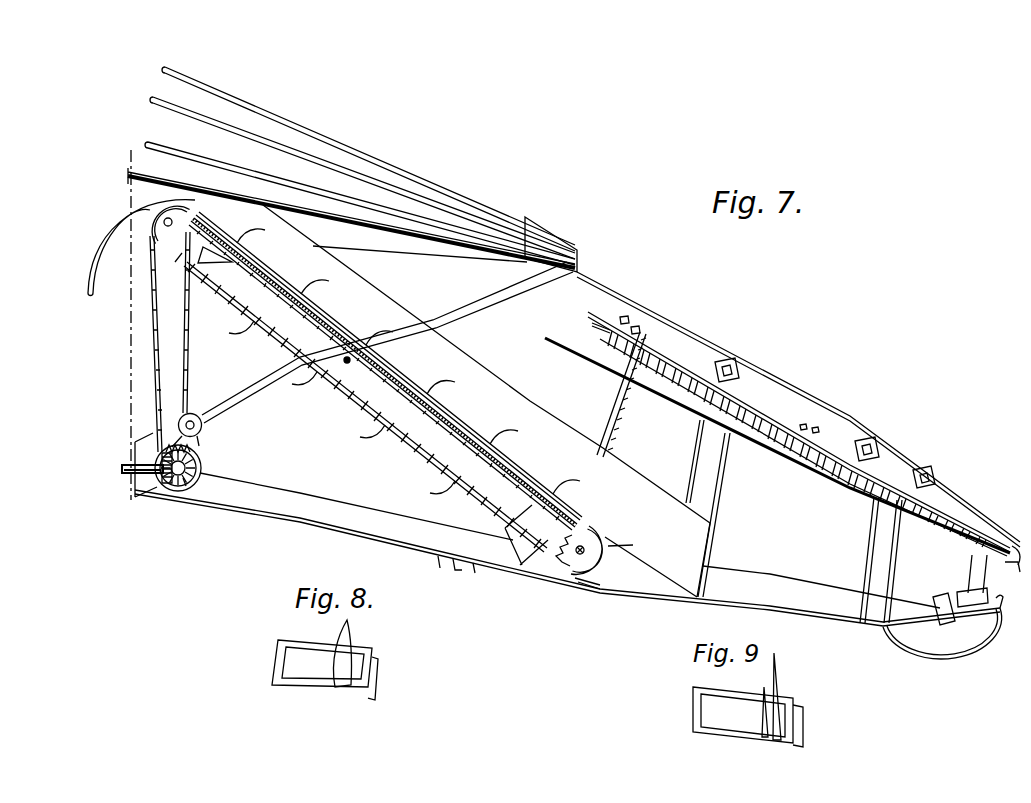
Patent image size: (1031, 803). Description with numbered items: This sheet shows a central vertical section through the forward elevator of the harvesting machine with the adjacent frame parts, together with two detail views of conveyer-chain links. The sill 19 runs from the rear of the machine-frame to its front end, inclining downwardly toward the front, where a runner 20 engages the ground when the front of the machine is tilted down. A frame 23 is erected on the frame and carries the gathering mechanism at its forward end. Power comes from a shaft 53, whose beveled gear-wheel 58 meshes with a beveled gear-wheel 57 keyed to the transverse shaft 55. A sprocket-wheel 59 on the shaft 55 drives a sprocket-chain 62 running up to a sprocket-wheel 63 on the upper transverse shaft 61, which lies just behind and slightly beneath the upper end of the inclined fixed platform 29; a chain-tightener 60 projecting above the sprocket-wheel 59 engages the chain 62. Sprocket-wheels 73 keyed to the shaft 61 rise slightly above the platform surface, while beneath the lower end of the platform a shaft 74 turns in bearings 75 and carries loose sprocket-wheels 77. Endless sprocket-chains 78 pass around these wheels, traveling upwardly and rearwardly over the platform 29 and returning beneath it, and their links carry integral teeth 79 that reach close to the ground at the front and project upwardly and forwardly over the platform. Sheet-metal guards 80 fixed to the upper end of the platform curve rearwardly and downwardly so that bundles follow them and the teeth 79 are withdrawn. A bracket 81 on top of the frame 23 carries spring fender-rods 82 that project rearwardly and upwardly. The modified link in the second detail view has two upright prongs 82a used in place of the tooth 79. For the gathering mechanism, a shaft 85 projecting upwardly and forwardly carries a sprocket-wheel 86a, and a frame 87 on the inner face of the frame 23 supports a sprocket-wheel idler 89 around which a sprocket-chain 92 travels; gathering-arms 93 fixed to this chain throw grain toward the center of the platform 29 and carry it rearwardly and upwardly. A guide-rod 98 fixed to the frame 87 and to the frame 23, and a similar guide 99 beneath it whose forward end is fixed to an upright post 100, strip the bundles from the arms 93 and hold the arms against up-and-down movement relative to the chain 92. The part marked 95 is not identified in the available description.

In FIG. 7, the spring fender-rods 82 is at (245, 107).
In FIG. 7, the transverse shaft 61 is at (170, 222).
In FIG. 7, the sprocket-wheels 73 is at (160, 215).
In FIG. 7, the sprocket-wheel 63 is at (186, 222).
In FIG. 7, the sheet-metal guards 80 is at (95, 280).
In FIG. 7, the teeth 79 is at (310, 296).
In FIG. 8, the teeth 79 is at (350, 632).
In FIG. 7, the sprocket-chain 62 is at (188, 378).
In FIG. 7, the chain-tightener 60 is at (202, 424).
In FIG. 7, the sprocket-wheel 59 is at (201, 452).
In FIG. 7, the shaft 55 is at (202, 468).
In FIG. 7, the shaft 53 is at (128, 470).
In FIG. 7, the beveled gear-wheel 58 is at (167, 486).
In FIG. 7, the beveled gear-wheel 57 is at (184, 484).
In FIG. 7, the sill 19 is at (567, 549).
In FIG. 7, the inclined fixed platform 29 is at (507, 400).
In FIG. 7, the endless sprocket-chains 78 is at (412, 450).
In FIG. 8, the endless sprocket-chains 78 is at (292, 640).
In FIG. 7, the sprocket-wheels 77 is at (598, 547).
In FIG. 7, the shaft 74 is at (578, 554).
In FIG. 7, the bearings 75 is at (592, 580).
In FIG. 7, the bracket 81 is at (578, 254).
In FIG. 7, the frame 23 is at (798, 419).
In FIG. 7, the guide-rod 98 is at (520, 300).
In FIG. 7, the guide 99 is at (535, 318).
In FIG. 7, the gathering-arms 93 is at (562, 322).
In FIG. 7, the sprocket-chain 92 is at (772, 440).
In FIG. 7, the sprocket-wheel 86a is at (600, 345).
In FIG. 7, the shaft 85 is at (601, 400).
In FIG. 7, the frame 87 is at (662, 349).
In FIG. 7, the hook 95 is at (972, 547).
In FIG. 7, the upright post 100 is at (978, 591).
In FIG. 7, the sprocket-wheel idler 89 is at (1011, 558).
In FIG. 7, the runners 20 is at (937, 654).
In FIG. 9, the upright prongs 82a is at (779, 676).